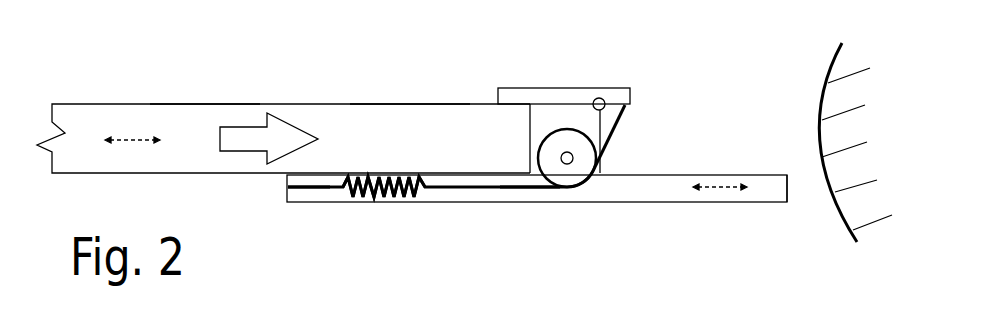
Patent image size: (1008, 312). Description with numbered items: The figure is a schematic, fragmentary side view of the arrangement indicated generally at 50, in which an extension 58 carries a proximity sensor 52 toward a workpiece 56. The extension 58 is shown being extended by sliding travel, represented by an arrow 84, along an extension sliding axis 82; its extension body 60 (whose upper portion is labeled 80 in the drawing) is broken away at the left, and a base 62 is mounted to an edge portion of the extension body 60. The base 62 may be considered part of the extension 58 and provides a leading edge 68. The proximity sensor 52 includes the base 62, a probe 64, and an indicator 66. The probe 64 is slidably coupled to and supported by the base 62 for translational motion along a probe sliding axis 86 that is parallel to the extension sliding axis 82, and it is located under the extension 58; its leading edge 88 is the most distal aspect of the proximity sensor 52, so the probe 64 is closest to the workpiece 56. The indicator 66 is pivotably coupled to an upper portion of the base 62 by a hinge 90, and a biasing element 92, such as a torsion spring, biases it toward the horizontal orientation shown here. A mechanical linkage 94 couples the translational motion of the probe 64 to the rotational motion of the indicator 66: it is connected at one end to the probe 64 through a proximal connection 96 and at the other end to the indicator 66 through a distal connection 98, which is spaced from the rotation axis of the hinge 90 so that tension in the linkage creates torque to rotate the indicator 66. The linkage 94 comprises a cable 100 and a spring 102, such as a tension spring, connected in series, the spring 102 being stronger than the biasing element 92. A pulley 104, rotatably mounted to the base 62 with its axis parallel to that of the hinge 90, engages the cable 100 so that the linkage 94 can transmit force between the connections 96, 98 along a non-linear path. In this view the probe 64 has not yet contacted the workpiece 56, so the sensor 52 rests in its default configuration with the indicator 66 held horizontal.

The tensioning system 50 is at (125, 57).
The proximity sensor 52 is at (557, 59).
The workpiece 56 is at (828, 72).
The extension 58 is at (97, 102).
The extension body 60 is at (411, 104).
The base 62 is at (528, 120).
The probe 64 is at (673, 203).
The indicator 66 is at (548, 88).
The leading edge 68 is at (600, 165).
The upper surface of first band 80 is at (200, 104).
The extension sliding axis 82 is at (138, 143).
The sliding travel arrow 84 is at (245, 125).
The probe sliding axis 86 is at (727, 190).
The leading edge of probe 88 is at (787, 187).
The hinge 90 is at (597, 98).
The biasing element 92 is at (601, 98).
The mechanical linkage 94 is at (500, 192).
The proximal connection 96 is at (287, 190).
The distal connection 98 is at (628, 106).
The cable 100 is at (527, 189).
The spring 102 is at (400, 197).
The pulley 104 is at (540, 140).